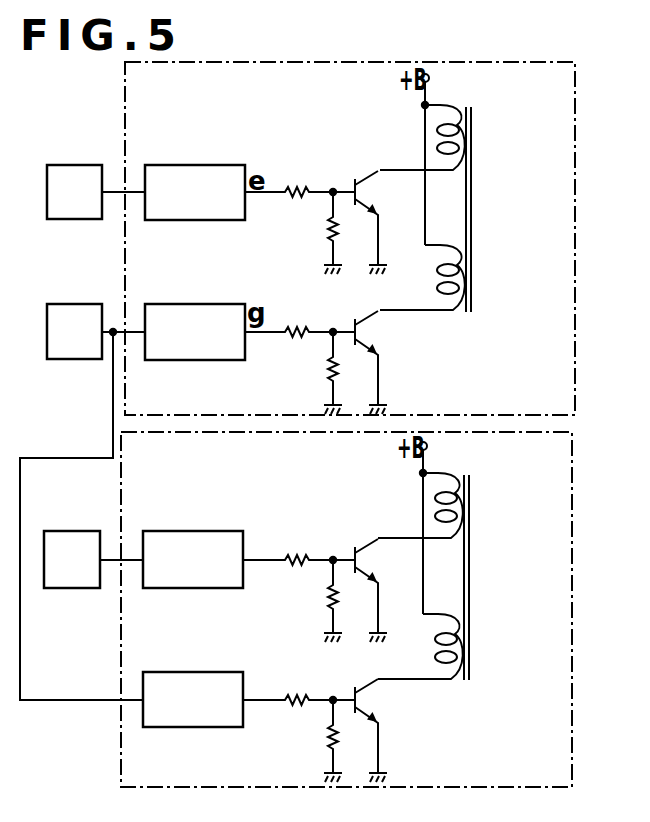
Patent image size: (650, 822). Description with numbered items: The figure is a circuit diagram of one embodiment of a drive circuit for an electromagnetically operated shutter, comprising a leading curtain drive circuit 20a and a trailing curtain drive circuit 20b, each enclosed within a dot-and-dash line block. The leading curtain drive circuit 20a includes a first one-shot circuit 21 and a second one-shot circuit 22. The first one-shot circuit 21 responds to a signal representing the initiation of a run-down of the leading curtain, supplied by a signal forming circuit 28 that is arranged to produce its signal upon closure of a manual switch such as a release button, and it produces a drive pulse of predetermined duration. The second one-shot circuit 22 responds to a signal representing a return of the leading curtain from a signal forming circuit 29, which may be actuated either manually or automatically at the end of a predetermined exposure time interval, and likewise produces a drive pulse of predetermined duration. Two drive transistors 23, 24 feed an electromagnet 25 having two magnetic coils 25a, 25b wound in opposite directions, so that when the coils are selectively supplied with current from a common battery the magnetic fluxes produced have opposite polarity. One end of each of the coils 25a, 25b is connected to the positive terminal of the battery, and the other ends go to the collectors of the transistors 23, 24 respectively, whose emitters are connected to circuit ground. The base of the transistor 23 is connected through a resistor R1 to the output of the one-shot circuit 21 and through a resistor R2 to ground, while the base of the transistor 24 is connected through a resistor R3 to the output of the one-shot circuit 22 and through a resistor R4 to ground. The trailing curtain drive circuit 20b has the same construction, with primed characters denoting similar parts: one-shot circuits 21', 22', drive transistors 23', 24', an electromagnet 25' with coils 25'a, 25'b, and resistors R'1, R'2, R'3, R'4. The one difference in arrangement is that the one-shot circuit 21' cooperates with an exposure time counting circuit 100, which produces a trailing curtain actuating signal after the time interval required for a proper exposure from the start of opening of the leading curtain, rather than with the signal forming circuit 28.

The leading curtain drive circuit 20a is at (576, 127).
The trailing curtain drive circuit 20b is at (573, 462).
The first one-shot circuit 21 is at (195, 192).
The second one-shot circuit 22 is at (195, 332).
The drive transistor 23 is at (368, 201).
The drive transistor 24 is at (368, 342).
The electromagnet 25 is at (486, 209).
The magnetic coil 25a is at (455, 107).
The magnetic coil 25b is at (470, 259).
The signal forming circuit 28 is at (74, 192).
The signal forming circuit 29 is at (74, 331).
The exposure time counting circuit 100 is at (72, 559).
The one-shot circuit 21' is at (193, 559).
The one-shot circuit 22' is at (193, 699).
The drive transistor 23' is at (368, 569).
The drive transistor 24' is at (368, 710).
The electromagnet 25' is at (487, 577).
The magnetic coil 25'a is at (434, 487).
The magnetic coil 25'b is at (448, 638).
The resistor R1 is at (297, 176).
The resistor R2 is at (323, 233).
The resistor R3 is at (297, 315).
The resistor R4 is at (322, 373).
The resistor R'1 is at (297, 539).
The resistor R'2 is at (321, 601).
The resistor R'3 is at (297, 679).
The resistor R'4 is at (321, 741).